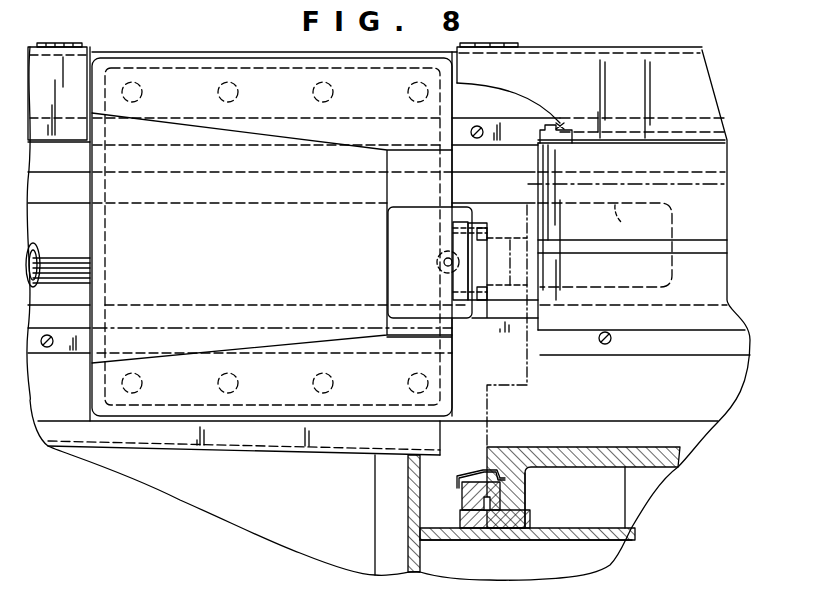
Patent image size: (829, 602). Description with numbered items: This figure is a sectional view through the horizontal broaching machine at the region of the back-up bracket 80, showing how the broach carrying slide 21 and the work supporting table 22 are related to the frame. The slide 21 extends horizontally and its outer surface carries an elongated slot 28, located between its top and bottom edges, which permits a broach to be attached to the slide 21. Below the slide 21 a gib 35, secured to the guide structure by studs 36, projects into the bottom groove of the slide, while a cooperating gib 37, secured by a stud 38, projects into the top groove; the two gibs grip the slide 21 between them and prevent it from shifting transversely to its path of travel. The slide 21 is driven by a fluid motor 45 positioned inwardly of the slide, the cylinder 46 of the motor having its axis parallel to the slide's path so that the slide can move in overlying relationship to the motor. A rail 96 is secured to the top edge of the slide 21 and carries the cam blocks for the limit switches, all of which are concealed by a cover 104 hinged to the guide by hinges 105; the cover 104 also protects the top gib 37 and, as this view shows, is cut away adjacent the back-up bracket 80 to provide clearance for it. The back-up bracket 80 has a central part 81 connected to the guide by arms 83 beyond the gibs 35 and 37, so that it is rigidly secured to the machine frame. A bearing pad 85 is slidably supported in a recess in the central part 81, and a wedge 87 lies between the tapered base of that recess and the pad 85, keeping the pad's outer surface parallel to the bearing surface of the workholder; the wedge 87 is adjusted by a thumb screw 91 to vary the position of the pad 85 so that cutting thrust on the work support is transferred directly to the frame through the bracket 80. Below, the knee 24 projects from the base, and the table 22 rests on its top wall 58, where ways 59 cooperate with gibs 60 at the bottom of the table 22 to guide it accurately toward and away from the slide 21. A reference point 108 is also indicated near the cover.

The broach carrying slide 21 is at (690, 286).
The work supporting table 22 is at (628, 457).
The knee 24 is at (621, 540).
The elongated slot 28 is at (718, 251).
The gib 35 is at (505, 322).
The studs 36 is at (607, 344).
The cooperating gib 37 is at (509, 163).
The stud 38 is at (481, 128).
The fluid motor 45 is at (54, 241).
The cylinder 46 is at (58, 208).
The top wall 58 is at (572, 536).
The ways 59 is at (487, 505).
The gibs 60 is at (492, 506).
The back-up bracket 80 is at (240, 252).
The central part 81 is at (398, 270).
The arms 83 is at (207, 75).
The bearing pad 85 is at (488, 250).
The wedge 87 is at (460, 247).
The thumb screw 91 is at (446, 263).
The rail 96 is at (542, 226).
The cover 104 is at (580, 63).
The hinges 105 is at (514, 46).
The connection point 108 is at (560, 122).